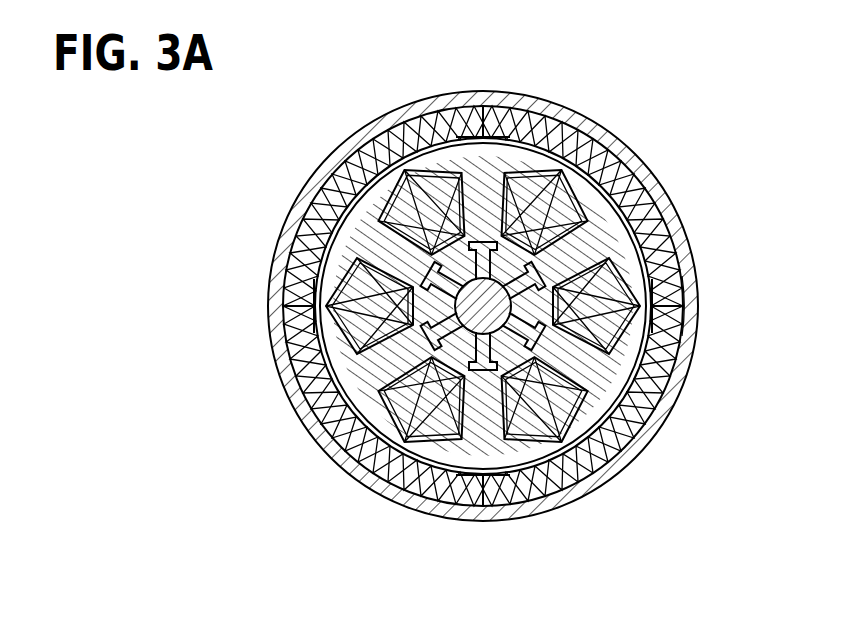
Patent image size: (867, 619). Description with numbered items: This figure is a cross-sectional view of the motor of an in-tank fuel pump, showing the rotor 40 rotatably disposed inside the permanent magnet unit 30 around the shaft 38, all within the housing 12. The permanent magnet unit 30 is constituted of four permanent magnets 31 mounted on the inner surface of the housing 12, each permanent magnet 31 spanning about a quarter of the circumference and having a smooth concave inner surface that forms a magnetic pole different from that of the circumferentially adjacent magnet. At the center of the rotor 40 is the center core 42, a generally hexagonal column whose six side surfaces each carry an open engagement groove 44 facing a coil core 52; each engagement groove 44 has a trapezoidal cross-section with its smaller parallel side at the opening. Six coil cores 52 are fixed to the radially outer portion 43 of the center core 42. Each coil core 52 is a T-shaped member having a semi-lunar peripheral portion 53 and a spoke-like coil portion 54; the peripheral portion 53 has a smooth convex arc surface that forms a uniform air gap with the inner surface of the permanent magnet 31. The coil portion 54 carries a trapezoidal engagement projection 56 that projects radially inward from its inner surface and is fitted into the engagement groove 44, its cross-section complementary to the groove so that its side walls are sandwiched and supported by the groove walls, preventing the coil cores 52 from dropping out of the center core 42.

The housing 12 is at (696, 328).
The permanent magnet unit 30 is at (355, 142).
The permanent magnet 31 is at (425, 115).
The shaft 38 is at (695, 290).
The rotor 40 is at (290, 306).
The center core 42 is at (497, 130).
The radially outer portion 43 is at (590, 115).
The engagement groove 44 is at (525, 120).
The coil core 52 is at (483, 135).
The peripheral portion 53 is at (545, 140).
The coil portion 54 is at (465, 140).
The engagement projection 56 is at (445, 135).